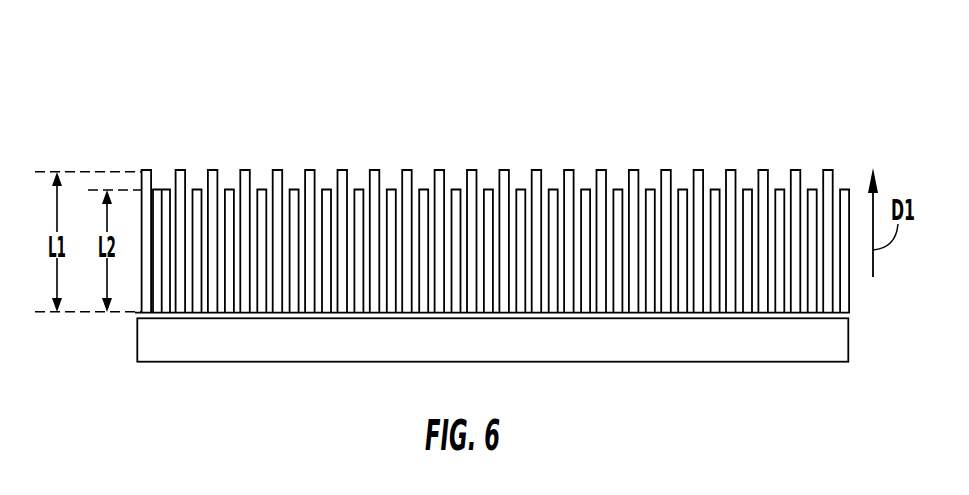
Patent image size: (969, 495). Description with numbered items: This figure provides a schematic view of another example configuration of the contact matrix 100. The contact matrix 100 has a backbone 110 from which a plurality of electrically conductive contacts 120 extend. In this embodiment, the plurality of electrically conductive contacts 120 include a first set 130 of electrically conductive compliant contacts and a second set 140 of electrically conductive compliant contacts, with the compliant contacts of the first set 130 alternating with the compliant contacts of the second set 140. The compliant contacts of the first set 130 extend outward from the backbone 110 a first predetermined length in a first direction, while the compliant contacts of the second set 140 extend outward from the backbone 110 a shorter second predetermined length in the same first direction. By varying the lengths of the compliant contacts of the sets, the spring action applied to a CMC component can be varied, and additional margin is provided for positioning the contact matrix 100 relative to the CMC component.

The contact matrix 100 is at (283, 82).
The backbone 110 is at (208, 363).
The plurality of electrically conductive contacts 120 is at (607, 148).
The first set of electrically conductive compliant contacts 130 is at (468, 168).
The second set of electrically conductive compliant contacts 140 is at (780, 178).